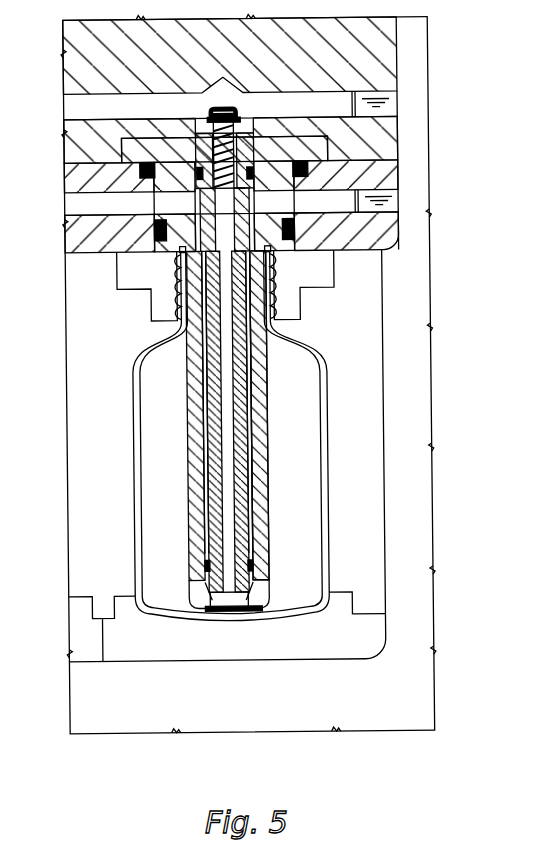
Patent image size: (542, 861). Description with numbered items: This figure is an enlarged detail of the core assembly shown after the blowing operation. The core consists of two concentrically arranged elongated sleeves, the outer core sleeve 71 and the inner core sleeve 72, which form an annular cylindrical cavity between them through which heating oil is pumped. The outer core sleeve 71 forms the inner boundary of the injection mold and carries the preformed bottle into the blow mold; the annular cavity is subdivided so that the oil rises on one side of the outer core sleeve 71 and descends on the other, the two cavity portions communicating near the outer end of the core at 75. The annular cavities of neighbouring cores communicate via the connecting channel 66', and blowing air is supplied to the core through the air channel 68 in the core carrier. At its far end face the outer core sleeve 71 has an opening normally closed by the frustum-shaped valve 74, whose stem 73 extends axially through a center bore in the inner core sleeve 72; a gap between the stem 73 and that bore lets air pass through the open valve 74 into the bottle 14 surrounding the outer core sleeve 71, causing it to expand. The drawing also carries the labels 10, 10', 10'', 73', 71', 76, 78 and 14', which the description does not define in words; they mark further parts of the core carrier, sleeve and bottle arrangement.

The housing block 10 is at (275, 134).
The air channel 68 is at (96, 106).
The housing part 10' is at (207, 139).
The connecting channel 66' is at (209, 190).
The lower housing part 10'' is at (208, 236).
The tube fitting 73' is at (342, 146).
The flanged bushing 71' is at (305, 193).
The seals 76 is at (364, 211).
The threaded collar 78 is at (313, 272).
The container holder 14' is at (280, 454).
The valve stem 73 is at (345, 400).
The inner core sleeve 72 is at (243, 382).
The outer core sleeve 71 is at (337, 428).
The communication point of cavity portions 75 is at (253, 449).
The bottle 14 is at (310, 435).
The valve 74 is at (241, 600).